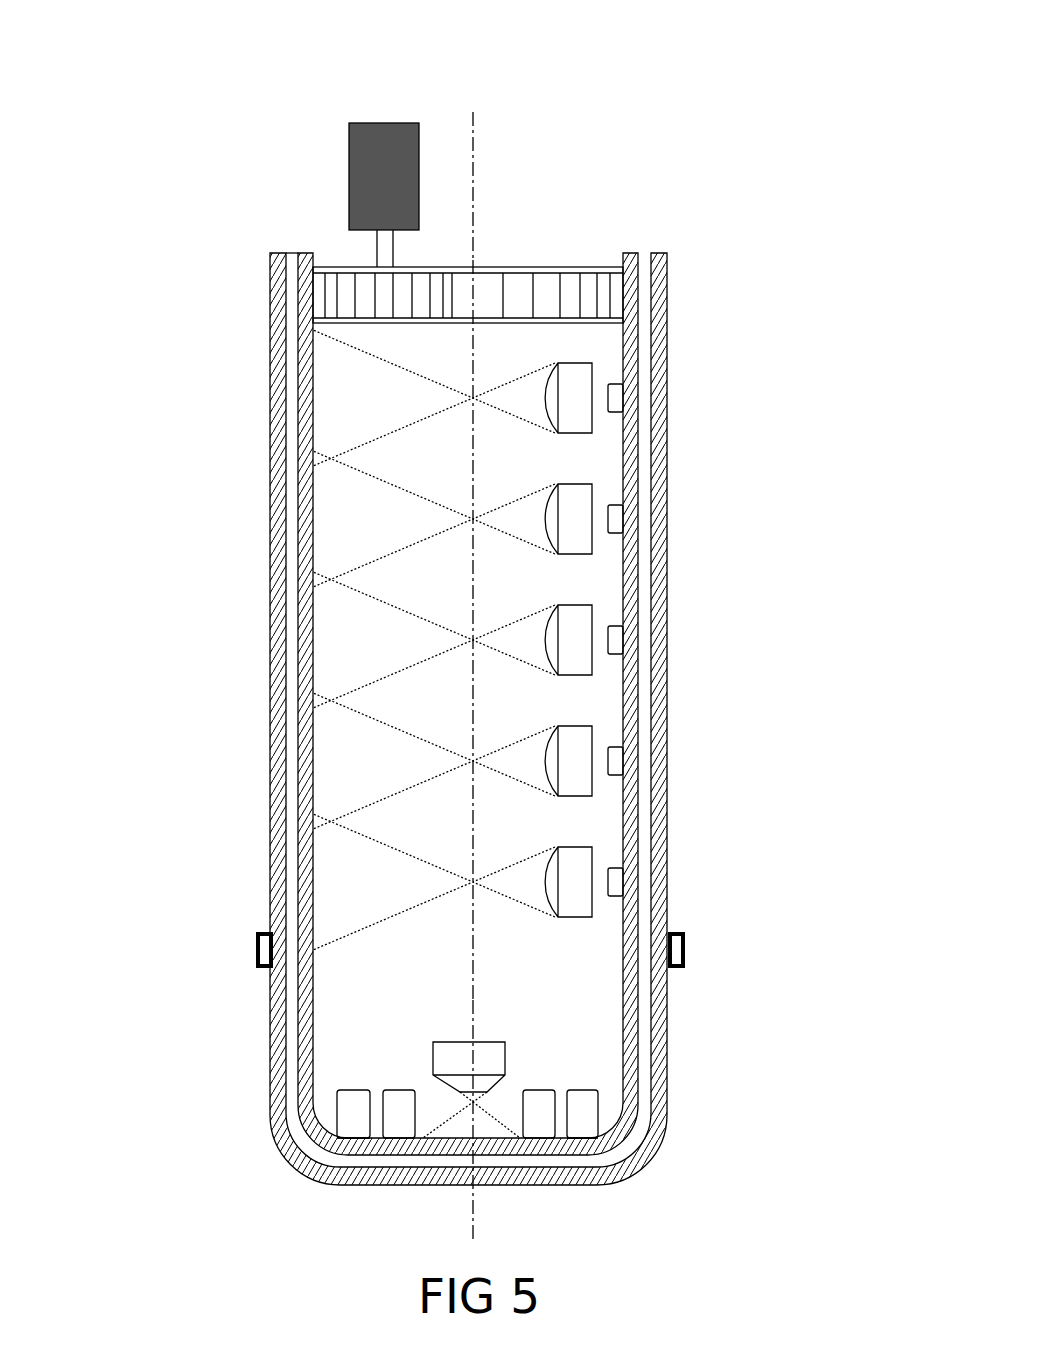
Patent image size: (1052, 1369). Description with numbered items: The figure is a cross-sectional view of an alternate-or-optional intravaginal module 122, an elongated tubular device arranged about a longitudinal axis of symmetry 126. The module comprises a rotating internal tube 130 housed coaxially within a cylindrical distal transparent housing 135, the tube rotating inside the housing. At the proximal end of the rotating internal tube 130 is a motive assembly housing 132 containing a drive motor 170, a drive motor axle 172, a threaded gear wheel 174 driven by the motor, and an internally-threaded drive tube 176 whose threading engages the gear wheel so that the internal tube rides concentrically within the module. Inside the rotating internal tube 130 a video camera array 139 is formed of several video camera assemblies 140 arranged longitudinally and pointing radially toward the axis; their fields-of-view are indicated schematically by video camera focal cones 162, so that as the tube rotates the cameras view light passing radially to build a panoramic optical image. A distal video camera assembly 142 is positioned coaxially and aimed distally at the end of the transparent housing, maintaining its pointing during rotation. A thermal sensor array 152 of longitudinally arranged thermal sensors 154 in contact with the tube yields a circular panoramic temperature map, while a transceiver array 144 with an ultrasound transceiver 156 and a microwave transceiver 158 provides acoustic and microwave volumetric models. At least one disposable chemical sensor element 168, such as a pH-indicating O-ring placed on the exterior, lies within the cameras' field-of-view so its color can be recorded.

The alternate-or-optional intravaginal module 122 is at (129, 156).
The longitudinal axis of symmetry 126 is at (475, 130).
The rotating internal tube 130 is at (305, 385).
The motive assembly housing 132 is at (458, 75).
The distal transparent housing 135 is at (272, 855).
The video camera array 139 is at (719, 322).
The video camera assembly 140 is at (590, 420).
The distal video camera assembly 142 is at (490, 1040).
The transceiver array 144 is at (550, 1004).
The thermal sensor array 152 is at (759, 362).
The thermal sensor 154 is at (620, 755).
The ultrasound transceiver 156 is at (335, 1103).
The microwave transceiver 158 is at (397, 1090).
The video camera focal cone 162 is at (380, 490).
The disposable chemical sensor element 168 is at (256, 947).
The drive motor 170 is at (350, 152).
The drive motor axle 172 is at (382, 258).
The threaded gear wheel 174 is at (430, 272).
The internally-threaded drive tube 176 is at (583, 267).